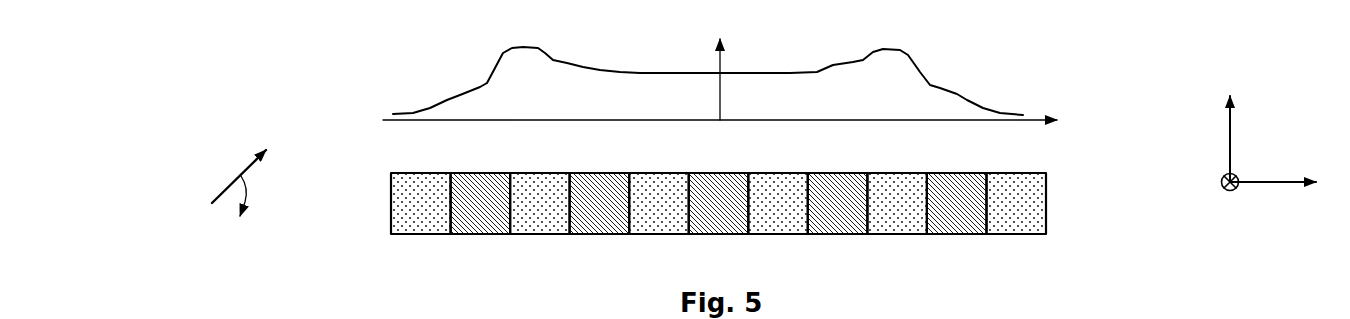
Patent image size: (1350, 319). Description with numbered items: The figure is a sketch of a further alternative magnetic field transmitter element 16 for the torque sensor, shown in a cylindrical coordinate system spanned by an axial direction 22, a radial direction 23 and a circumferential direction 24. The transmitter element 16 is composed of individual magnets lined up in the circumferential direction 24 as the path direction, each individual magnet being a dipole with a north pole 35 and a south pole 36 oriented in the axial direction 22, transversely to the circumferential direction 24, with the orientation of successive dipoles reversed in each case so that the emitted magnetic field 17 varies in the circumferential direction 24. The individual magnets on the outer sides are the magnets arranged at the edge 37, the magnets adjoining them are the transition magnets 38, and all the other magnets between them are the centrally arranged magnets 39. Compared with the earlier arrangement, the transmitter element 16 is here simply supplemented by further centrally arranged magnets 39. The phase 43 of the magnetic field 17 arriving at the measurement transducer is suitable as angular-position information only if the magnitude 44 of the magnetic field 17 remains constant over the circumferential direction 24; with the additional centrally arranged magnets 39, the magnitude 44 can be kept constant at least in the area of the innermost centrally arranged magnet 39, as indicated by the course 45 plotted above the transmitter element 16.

The magnetic field transmitter element 16 is at (375, 168).
The magnetic field 17 is at (197, 168).
The axial direction 22 is at (1228, 193).
The radial direction 23 is at (1238, 103).
The circumferential direction 24 is at (1053, 127).
The north pole 35 is at (425, 173).
The south pole 36 is at (485, 173).
The magnet arranged at the edge 37 is at (393, 244).
The transition magnet 38 is at (473, 244).
The centrally arranged magnet 39 is at (935, 275).
The phase 43 is at (253, 205).
The magnitude 44 is at (721, 40).
The curve 45 is at (946, 45).